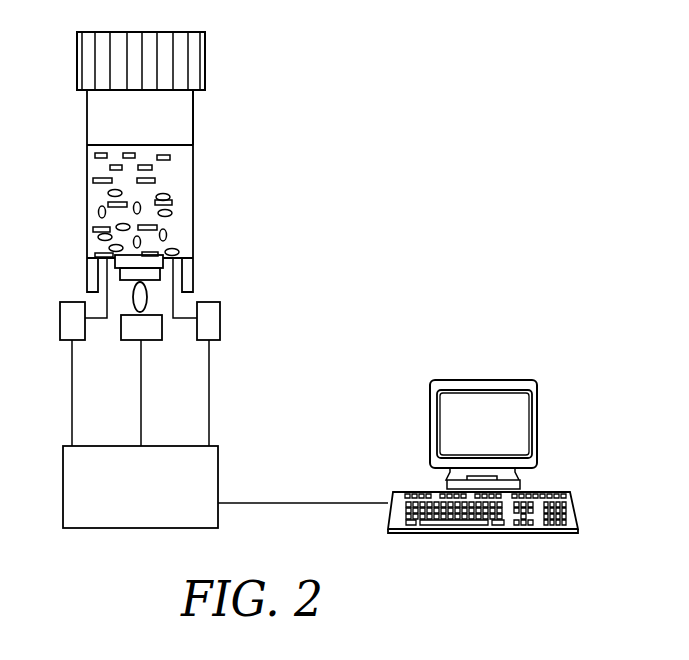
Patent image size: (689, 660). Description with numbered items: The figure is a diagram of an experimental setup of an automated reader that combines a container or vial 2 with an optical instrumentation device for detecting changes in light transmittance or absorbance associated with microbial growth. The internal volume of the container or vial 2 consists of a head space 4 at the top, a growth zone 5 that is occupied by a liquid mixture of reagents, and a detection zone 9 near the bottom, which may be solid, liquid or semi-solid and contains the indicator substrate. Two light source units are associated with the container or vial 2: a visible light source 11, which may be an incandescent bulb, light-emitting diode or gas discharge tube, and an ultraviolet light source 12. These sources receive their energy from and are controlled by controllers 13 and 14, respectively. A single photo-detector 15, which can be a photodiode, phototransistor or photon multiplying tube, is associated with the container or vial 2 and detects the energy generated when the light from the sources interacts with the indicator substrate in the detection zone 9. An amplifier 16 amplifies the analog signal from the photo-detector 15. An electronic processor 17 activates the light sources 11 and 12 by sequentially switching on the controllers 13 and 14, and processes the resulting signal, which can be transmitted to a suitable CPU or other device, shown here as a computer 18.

The container or vial 2 is at (92, 119).
The head space 4 is at (183, 123).
The growth zone 5 is at (182, 168).
The detection zone 9 is at (182, 234).
The visible light source 11 is at (197, 273).
The ultraviolet light source 12 is at (132, 298).
The controller 13 is at (222, 320).
The controller 14 is at (160, 340).
The photo-detector 15 is at (87, 273).
The amplifier 16 is at (60, 320).
The electronic processor 17 is at (187, 496).
The computer 18 is at (573, 498).